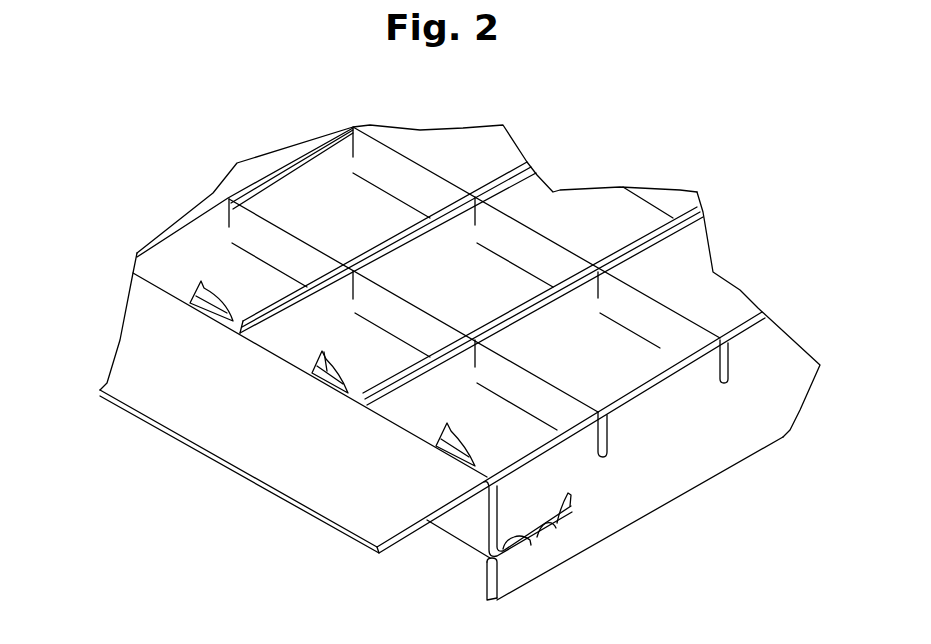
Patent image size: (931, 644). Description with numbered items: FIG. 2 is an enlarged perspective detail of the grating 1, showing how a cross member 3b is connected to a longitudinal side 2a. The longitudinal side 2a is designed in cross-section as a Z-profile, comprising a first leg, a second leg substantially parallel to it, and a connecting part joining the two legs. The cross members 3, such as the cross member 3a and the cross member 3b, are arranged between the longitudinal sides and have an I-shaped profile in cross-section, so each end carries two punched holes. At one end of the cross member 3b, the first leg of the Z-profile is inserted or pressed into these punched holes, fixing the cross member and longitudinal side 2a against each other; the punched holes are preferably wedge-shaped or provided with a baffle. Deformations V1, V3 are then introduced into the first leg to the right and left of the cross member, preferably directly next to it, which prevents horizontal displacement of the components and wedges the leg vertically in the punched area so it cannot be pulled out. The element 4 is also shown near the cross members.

The grating 1 is at (136, 145).
The longitudinal side 2a is at (183, 398).
The cross members 3 is at (420, 240).
The cross member 3a is at (603, 458).
The cross member 3b is at (577, 517).
The crossbeam 4 is at (275, 237).
The deformation V1 is at (327, 373).
The deformation V3 is at (317, 360).